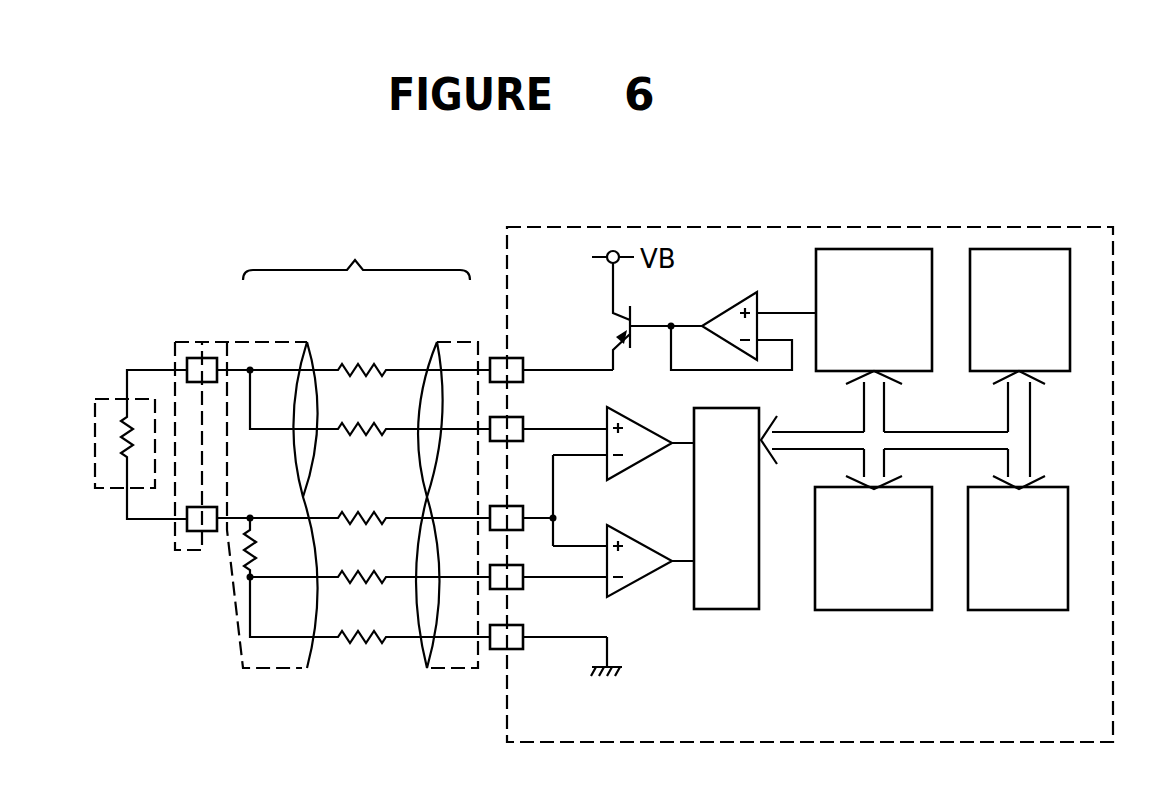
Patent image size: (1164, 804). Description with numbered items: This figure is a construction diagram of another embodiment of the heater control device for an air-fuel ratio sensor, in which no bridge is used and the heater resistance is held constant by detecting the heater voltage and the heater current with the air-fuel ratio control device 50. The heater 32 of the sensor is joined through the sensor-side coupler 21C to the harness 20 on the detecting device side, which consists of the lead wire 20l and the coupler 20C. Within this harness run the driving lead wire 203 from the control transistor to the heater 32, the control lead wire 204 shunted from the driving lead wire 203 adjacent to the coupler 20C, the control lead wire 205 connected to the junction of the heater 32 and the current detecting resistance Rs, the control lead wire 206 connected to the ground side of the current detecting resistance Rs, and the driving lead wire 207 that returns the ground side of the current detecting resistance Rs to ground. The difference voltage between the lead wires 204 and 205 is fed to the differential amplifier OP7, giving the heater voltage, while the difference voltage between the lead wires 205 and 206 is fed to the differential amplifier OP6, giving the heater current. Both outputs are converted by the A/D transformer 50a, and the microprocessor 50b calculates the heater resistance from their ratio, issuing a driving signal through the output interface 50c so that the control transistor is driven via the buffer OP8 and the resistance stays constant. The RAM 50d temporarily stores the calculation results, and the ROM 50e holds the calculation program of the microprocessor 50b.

The air-fuel ratio control device 50 is at (843, 743).
The A/D transformer 50a is at (722, 611).
The microprocessor 50b is at (865, 611).
The output interface 50c is at (858, 249).
The RAM 50d is at (1022, 249).
The ROM 50e is at (1010, 611).
The heater 32 is at (107, 400).
The coupler 21C is at (187, 347).
The coupler 20C is at (215, 347).
The harness 20 is at (380, 249).
The lead wire 20l is at (395, 318).
The driving lead wire 203 is at (362, 366).
The control lead wire 204 is at (362, 426).
The control lead wire 205 is at (362, 514).
The control lead wire 206 is at (362, 573).
The driving lead wire 207 is at (362, 634).
The current detecting resistance Rs is at (280, 533).
The differential amplifier OP6 is at (622, 541).
The differential amplifier OP7 is at (623, 460).
The buffer OP8 is at (742, 315).